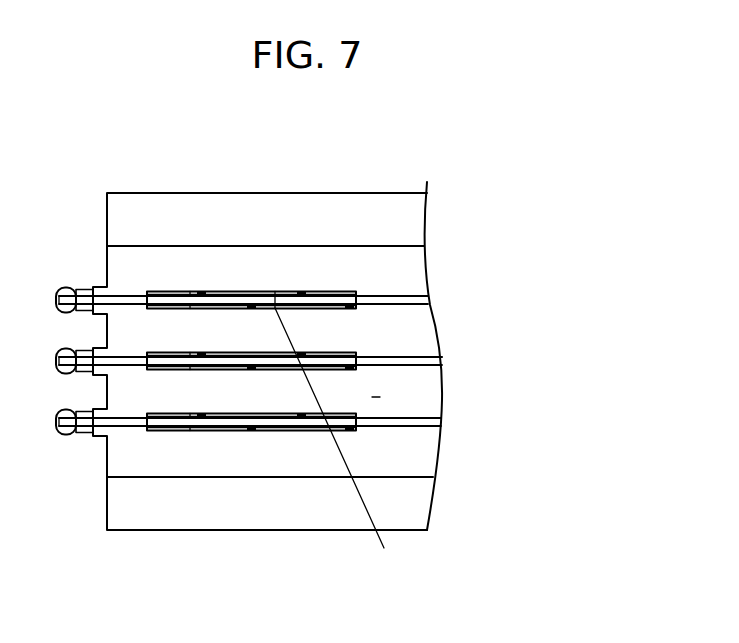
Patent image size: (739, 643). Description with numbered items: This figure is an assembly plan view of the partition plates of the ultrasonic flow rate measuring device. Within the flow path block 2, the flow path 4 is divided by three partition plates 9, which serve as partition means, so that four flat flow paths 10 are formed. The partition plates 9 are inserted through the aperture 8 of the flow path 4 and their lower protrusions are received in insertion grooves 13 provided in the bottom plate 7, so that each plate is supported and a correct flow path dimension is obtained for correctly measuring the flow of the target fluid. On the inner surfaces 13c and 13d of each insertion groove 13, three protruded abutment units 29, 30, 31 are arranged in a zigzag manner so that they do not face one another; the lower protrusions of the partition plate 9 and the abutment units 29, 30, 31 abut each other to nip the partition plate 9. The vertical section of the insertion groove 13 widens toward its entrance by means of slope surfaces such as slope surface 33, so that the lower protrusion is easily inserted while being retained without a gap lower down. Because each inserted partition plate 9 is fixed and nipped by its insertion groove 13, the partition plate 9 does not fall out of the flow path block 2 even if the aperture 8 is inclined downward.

The flow path block 2 is at (90, 223).
The flow path 4 is at (138, 395).
The bottom plate 7 is at (372, 397).
The aperture 8 is at (255, 447).
The partition plate 9 is at (435, 420).
The flat flow path 10 is at (362, 268).
The insertion groove 13 is at (344, 292).
The inner surface of insertion groove 13c is at (281, 292).
The inner surface of insertion groove 13d is at (343, 442).
The abutment unit 29 is at (311, 291).
The abutment unit 30 is at (198, 292).
The abutment unit 31 is at (254, 305).
The slope surface 33 is at (83, 288).